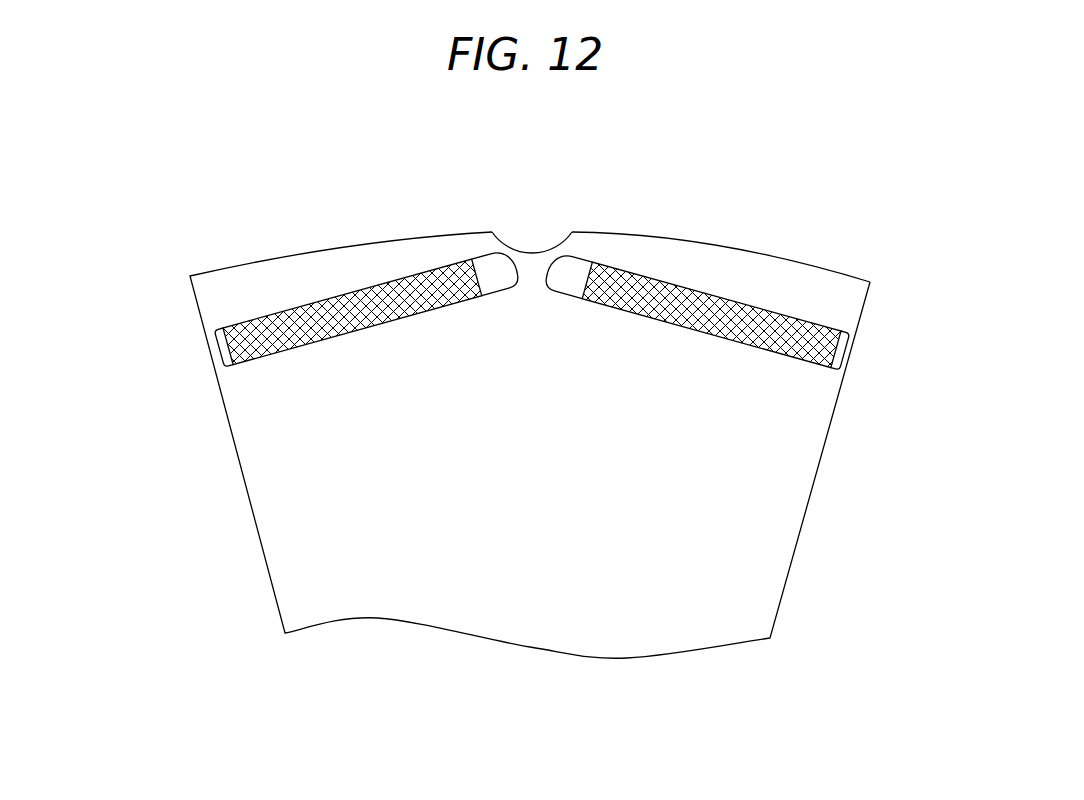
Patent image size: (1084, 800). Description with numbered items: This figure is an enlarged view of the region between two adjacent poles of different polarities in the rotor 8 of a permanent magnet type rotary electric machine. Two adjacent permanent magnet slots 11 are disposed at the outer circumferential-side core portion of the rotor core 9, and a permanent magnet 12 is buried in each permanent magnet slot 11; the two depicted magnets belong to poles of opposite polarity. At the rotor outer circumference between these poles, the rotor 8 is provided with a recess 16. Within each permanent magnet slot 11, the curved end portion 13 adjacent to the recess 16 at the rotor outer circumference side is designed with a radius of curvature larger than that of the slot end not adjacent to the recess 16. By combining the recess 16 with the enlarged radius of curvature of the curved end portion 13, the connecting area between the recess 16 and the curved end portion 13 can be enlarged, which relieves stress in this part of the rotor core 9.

The rotor 8 is at (707, 208).
The rotor core 9 is at (600, 575).
The permanent magnet slot 11 is at (307, 307).
The permanent magnet 12 is at (257, 368).
The curved end portion 13 is at (572, 233).
The recess 16 is at (530, 240).